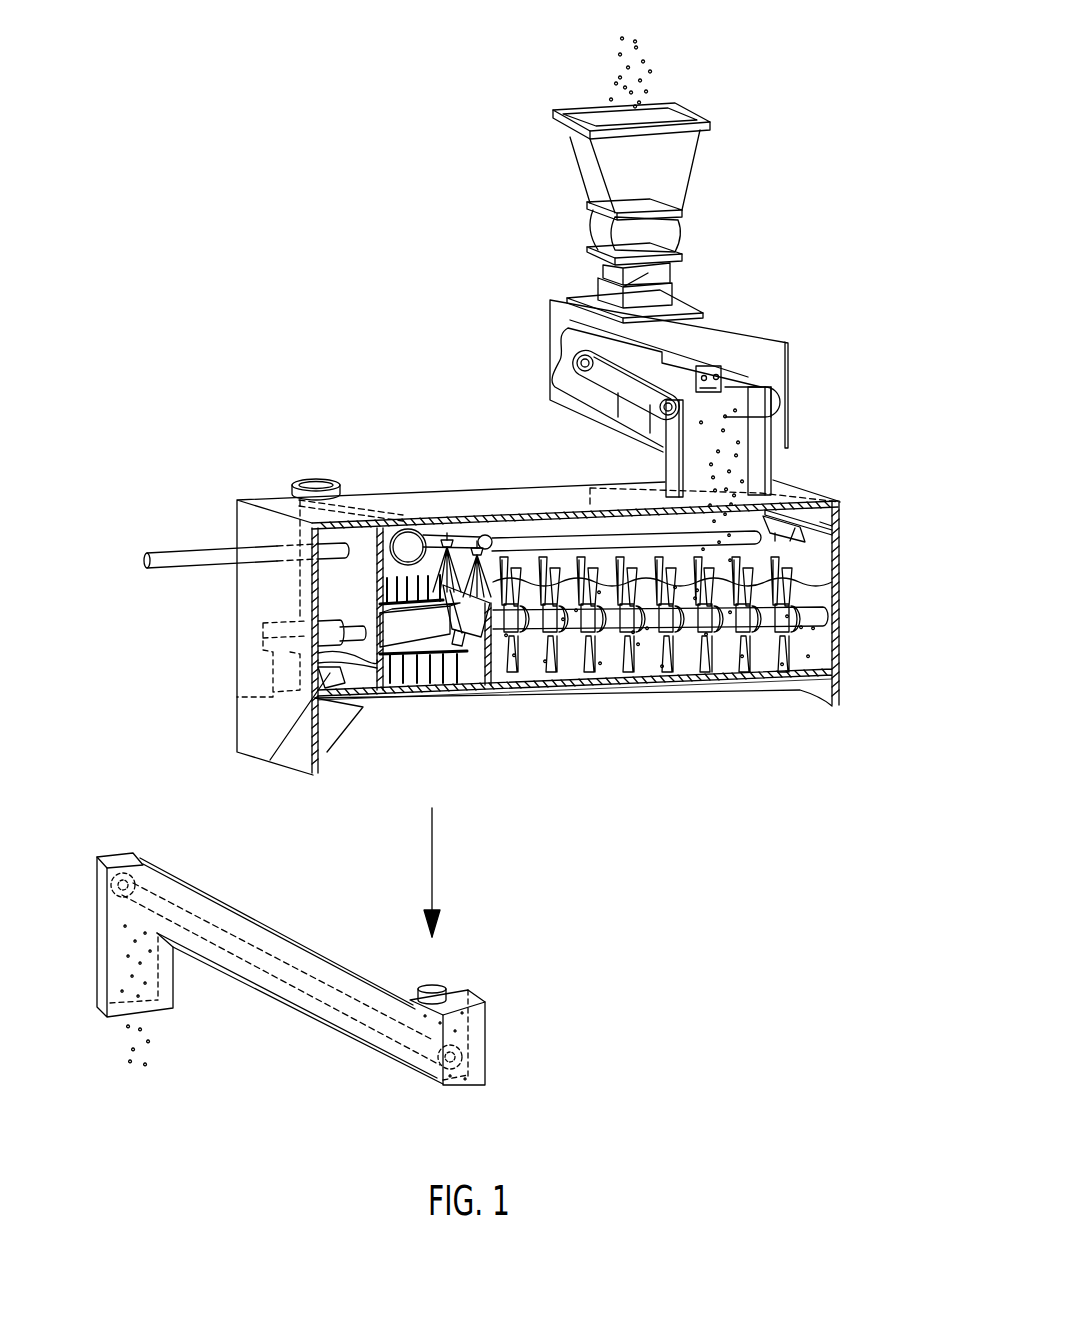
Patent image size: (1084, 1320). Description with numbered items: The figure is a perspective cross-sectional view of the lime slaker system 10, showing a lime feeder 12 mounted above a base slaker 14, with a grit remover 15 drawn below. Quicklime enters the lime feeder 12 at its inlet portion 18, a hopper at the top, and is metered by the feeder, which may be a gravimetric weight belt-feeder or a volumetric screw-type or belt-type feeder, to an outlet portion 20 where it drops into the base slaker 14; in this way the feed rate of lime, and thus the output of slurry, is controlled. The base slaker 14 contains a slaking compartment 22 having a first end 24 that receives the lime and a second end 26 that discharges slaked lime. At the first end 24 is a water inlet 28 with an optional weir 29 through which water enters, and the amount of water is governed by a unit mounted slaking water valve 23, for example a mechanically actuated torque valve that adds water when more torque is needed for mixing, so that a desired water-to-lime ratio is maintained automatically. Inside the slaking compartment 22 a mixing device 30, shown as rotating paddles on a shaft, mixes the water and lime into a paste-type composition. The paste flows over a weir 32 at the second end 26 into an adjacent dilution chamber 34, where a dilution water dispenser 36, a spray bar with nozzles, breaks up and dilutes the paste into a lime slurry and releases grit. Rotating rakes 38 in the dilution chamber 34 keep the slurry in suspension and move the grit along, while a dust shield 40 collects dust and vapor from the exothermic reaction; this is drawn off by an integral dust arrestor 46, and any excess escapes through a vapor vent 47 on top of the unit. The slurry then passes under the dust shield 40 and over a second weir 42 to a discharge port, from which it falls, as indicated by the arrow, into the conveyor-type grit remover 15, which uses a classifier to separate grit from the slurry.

The lime slaker system 10 is at (207, 318).
The lime feeder 12 is at (710, 274).
The base slaker 14 is at (514, 486).
The grit remover 15 is at (108, 848).
The inlet portion 18 is at (560, 110).
The outlet portion 20 is at (783, 402).
The slaking compartment 22 is at (647, 660).
The unit mounted slaking water valve 23 is at (153, 545).
The first end 24 is at (817, 594).
The second end 26 is at (475, 650).
The water inlet 28 is at (822, 518).
The weir 29 is at (793, 550).
The mixing device 30 is at (668, 590).
The weir 32 is at (460, 647).
The dilution chamber 34 is at (397, 695).
The dilution water dispenser 36 is at (462, 535).
The rotating rakes 38 is at (412, 670).
The dust shield 40 is at (360, 540).
The second weir 42 is at (330, 675).
The integral dust arrestor 46 is at (412, 530).
The vapor vent 47 is at (316, 482).